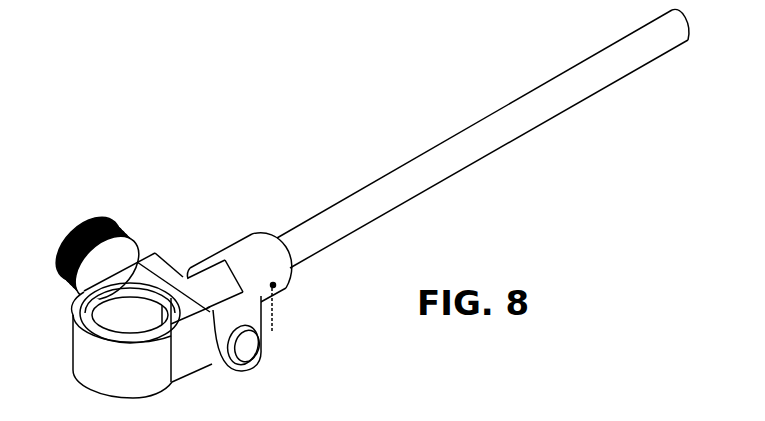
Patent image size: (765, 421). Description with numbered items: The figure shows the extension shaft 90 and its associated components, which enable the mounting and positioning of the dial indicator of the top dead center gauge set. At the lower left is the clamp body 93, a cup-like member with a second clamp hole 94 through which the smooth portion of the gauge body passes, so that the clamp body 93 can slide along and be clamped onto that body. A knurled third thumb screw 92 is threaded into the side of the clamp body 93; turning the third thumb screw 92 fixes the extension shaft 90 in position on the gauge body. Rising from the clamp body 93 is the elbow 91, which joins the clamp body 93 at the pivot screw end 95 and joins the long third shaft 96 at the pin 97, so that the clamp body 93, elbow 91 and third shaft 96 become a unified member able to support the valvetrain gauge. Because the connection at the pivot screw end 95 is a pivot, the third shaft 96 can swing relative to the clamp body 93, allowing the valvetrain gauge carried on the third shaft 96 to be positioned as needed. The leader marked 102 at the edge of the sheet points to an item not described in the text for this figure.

The extension shaft 90 is at (530, 224).
The elbow 91 is at (234, 243).
The third thumb screw 92 is at (81, 228).
The clamp body 93 is at (73, 363).
The second clamp hole 94 is at (87, 313).
The pivot screw end 95 is at (255, 358).
The third shaft 96 is at (433, 187).
The pin 97 is at (274, 286).
The element 102 is at (757, 420).